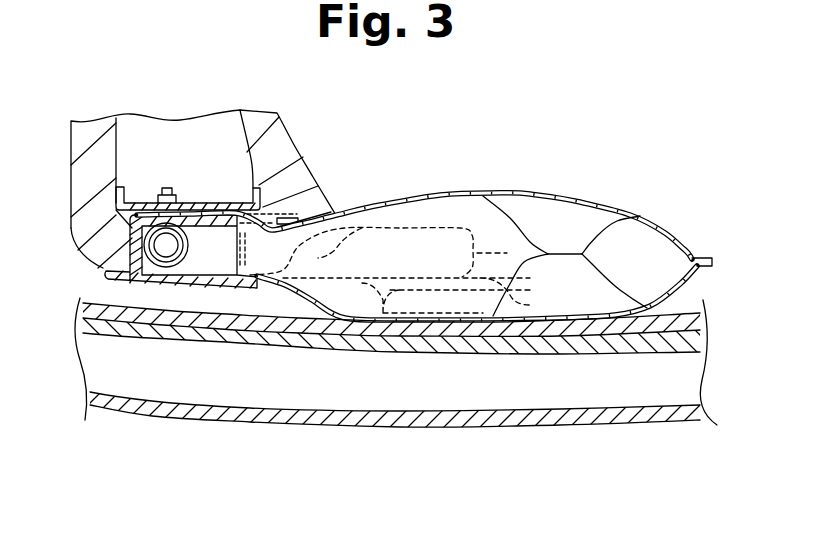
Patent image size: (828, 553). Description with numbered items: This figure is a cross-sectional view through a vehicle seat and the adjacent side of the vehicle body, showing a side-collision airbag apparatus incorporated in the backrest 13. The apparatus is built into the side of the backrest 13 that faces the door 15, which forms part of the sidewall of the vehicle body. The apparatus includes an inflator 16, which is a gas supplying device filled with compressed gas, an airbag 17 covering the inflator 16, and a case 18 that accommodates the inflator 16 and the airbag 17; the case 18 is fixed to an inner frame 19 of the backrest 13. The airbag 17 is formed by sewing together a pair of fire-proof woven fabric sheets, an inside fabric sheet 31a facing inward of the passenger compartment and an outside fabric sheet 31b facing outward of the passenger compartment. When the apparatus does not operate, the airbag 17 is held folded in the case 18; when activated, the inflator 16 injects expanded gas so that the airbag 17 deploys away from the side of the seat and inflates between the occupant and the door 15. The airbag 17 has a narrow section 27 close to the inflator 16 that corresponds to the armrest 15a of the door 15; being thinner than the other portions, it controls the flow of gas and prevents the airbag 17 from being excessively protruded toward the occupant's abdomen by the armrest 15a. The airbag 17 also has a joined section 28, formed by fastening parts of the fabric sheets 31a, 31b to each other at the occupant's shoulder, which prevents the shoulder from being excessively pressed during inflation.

The backrest 13 is at (287, 128).
The door 15 is at (453, 421).
The armrest 15a is at (620, 297).
The inflator 16 is at (107, 268).
The airbag 17 is at (424, 259).
The case 18 is at (77, 254).
The inner frame 19 is at (193, 207).
The narrow section 27 is at (393, 227).
The joined section 28 is at (565, 253).
The inside fabric sheet 31a is at (444, 192).
The outside fabric sheet 31b is at (297, 290).